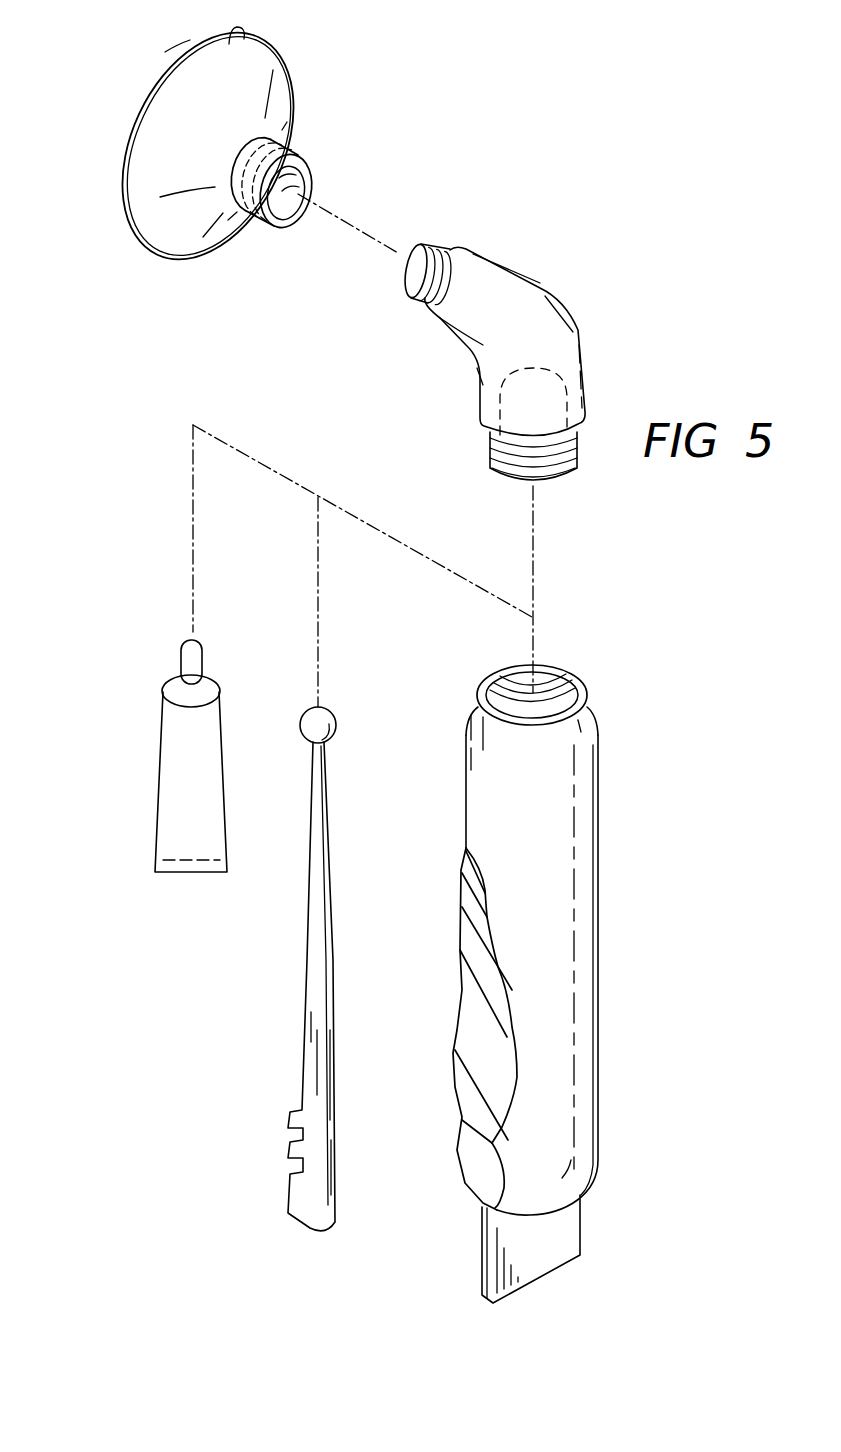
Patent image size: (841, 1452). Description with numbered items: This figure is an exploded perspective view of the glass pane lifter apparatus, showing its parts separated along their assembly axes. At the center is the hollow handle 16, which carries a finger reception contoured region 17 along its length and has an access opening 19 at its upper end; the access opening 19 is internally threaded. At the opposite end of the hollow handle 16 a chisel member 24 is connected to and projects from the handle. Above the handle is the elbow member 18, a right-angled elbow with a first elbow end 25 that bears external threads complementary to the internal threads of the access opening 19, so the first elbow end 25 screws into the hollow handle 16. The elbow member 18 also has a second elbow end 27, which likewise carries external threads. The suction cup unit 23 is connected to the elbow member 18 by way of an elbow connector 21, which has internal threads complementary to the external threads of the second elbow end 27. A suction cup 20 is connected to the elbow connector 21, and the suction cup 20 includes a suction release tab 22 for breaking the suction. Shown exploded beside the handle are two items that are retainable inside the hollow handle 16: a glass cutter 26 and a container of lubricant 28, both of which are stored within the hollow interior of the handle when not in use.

The hollow handle 16 is at (563, 895).
The finger reception contoured region 17 is at (418, 846).
The elbow member 18 is at (543, 345).
The access opening 19 is at (562, 683).
The suction cup 20 is at (165, 215).
The elbow connector 21 is at (265, 224).
The suction release tab 22 is at (246, 37).
The suction cup unit 23 is at (367, 143).
The chisel member 24 is at (573, 1238).
The first elbow end 25 is at (520, 462).
The glass cutter 26 is at (318, 973).
The second elbow end 27 is at (400, 283).
The container of lubricant 28 is at (183, 772).